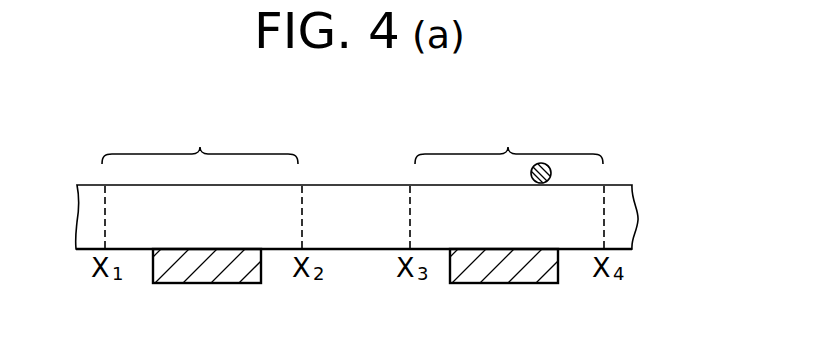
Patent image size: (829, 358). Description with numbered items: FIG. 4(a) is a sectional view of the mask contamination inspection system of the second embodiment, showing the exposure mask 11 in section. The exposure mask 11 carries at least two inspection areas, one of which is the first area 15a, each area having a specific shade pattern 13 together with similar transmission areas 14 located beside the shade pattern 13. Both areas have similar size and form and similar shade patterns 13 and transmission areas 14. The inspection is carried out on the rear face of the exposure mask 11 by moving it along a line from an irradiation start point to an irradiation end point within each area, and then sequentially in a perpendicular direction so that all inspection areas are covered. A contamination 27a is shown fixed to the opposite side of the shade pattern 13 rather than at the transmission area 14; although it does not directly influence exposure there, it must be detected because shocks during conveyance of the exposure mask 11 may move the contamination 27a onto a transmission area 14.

The exposure mask 11 is at (618, 232).
The shade pattern 13 is at (197, 270).
The transmission area 14 is at (138, 250).
The first area 15a is at (352, 137).
The contamination 27a is at (549, 180).